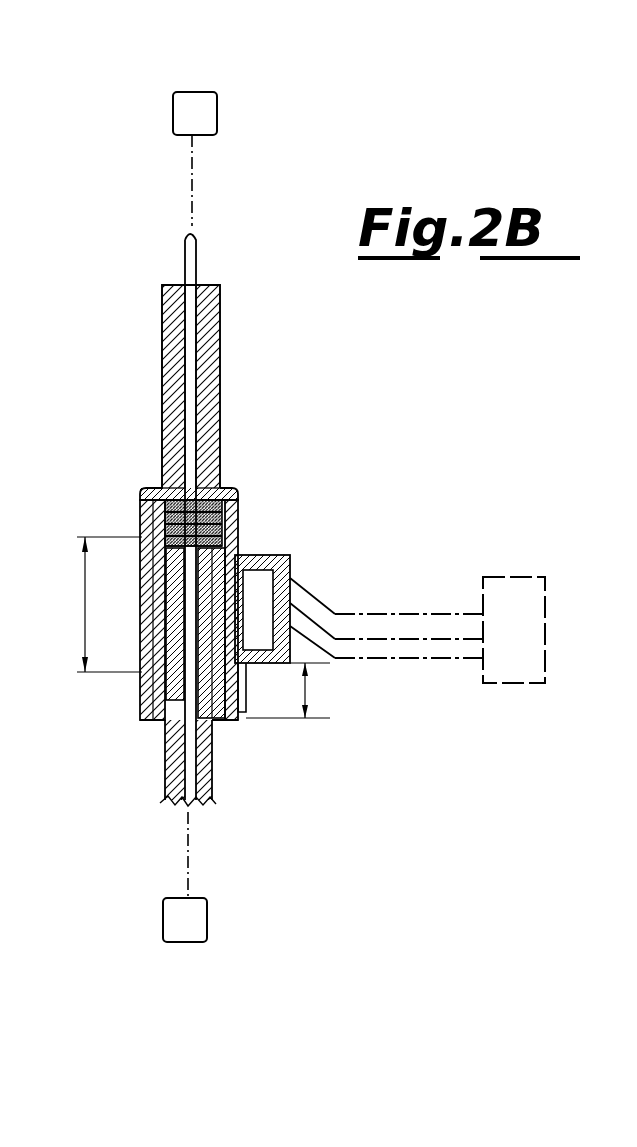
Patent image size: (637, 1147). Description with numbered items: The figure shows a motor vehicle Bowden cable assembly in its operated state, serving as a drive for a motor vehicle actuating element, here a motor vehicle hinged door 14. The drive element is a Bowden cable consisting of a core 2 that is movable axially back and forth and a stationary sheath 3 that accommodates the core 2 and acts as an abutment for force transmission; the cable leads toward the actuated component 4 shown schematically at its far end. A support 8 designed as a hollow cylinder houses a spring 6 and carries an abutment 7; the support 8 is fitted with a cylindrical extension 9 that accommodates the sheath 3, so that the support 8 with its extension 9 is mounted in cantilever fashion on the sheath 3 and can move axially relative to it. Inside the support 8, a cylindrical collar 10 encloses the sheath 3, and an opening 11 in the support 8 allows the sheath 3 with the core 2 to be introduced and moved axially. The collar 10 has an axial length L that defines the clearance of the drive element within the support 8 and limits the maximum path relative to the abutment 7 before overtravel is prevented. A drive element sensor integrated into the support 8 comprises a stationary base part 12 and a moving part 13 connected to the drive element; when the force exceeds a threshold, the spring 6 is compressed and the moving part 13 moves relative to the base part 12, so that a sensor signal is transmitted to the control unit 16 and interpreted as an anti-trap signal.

The core 2 is at (185, 258).
The sheath 3 is at (216, 790).
The drive unit 4 is at (184, 944).
The spring 6 is at (141, 512).
The abutment 7 is at (182, 500).
The support 8 is at (242, 494).
The extension 9 is at (222, 350).
The collar 10 is at (166, 640).
The opening 11 is at (227, 724).
The stationary base part 12 is at (265, 556).
The moving part 13 is at (246, 664).
The motor vehicle hinged door 14 is at (197, 98).
The control unit 16 is at (541, 592).
The axial length L is at (94, 604).
The distance s is at (296, 690).